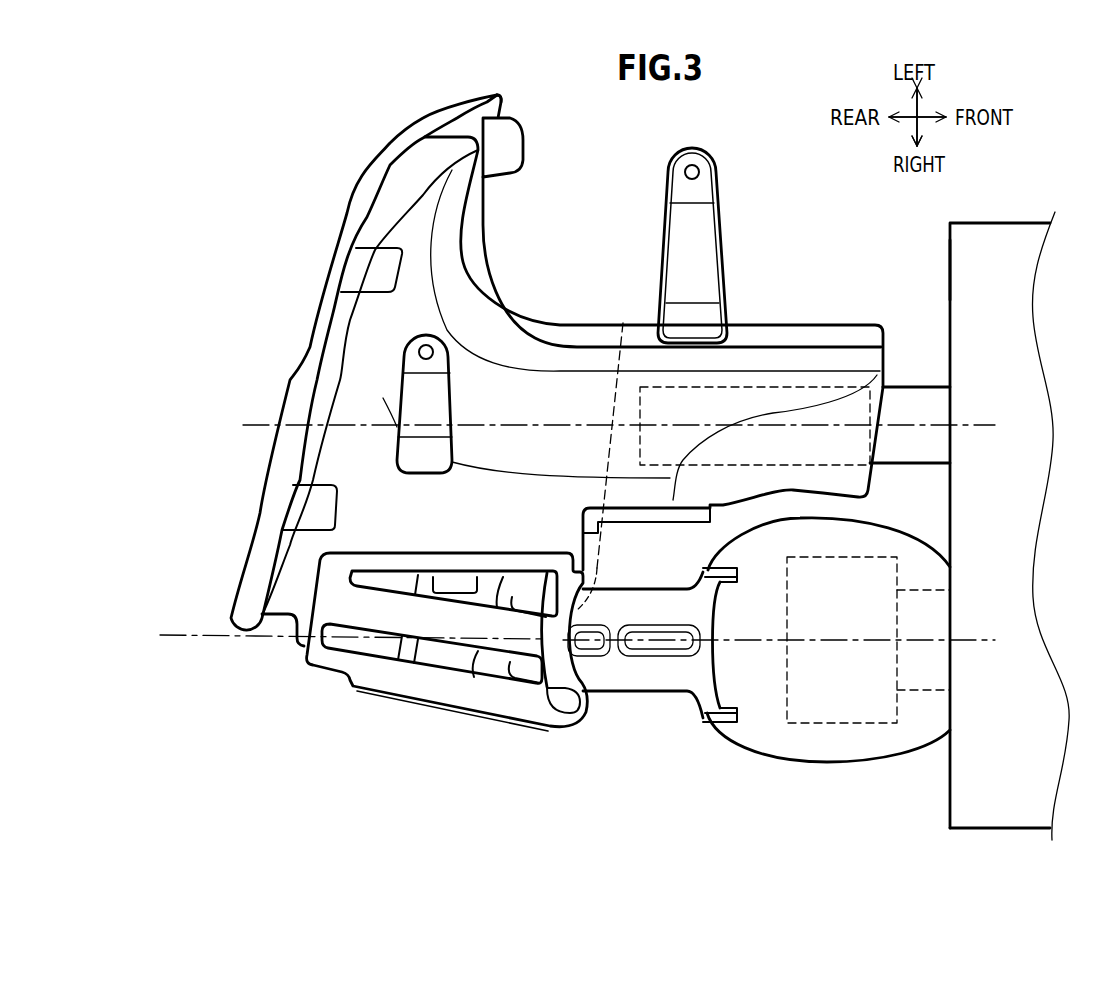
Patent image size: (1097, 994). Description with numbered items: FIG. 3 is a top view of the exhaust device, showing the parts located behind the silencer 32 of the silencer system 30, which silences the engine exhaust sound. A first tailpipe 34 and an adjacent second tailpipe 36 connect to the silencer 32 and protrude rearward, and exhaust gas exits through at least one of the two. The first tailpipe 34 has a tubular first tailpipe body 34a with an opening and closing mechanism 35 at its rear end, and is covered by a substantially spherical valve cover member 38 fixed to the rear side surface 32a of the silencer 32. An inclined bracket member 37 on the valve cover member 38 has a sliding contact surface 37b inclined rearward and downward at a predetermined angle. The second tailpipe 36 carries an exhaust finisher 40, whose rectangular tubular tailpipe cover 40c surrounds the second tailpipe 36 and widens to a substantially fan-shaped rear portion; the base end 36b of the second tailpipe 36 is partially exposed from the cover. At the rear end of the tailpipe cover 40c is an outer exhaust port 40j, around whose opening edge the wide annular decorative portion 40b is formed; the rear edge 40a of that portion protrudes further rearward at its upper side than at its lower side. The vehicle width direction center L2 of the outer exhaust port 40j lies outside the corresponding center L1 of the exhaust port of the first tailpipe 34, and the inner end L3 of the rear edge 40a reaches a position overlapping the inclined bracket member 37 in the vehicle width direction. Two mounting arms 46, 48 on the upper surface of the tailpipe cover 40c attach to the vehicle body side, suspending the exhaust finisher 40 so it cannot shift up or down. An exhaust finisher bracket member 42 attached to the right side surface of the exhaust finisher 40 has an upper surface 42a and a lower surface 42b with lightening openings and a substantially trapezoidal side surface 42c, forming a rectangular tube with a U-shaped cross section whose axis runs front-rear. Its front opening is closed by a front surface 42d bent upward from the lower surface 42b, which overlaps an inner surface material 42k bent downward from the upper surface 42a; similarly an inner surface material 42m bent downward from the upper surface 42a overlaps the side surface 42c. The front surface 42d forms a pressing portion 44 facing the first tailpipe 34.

The silencer system 30 is at (974, 496).
The silencer 32 is at (974, 506).
The rear side surface 32a is at (950, 263).
The first tailpipe 34 is at (826, 682).
The first tailpipe body 34a is at (928, 693).
The opening and closing mechanism 35 is at (845, 723).
The second tailpipe 36 is at (910, 383).
The base end 36b is at (920, 402).
The inclined bracket member 37 is at (644, 641).
The sliding contact surface 37b is at (665, 673).
The valve cover member 38 is at (768, 743).
The exhaust finisher 40 is at (568, 368).
The rear edge 40a is at (231, 624).
The annular decorative portion 40b is at (310, 313).
The tailpipe cover 40c is at (650, 375).
The outer exhaust port 40j is at (385, 144).
The exhaust finisher bracket member 42 is at (467, 647).
The upper surface 42a is at (386, 606).
The lower surface 42b is at (457, 597).
The side surface 42c is at (445, 708).
The front surface 42d is at (602, 577).
The inner surface material 42k is at (530, 587).
The inner surface material 42m is at (492, 710).
The pressing portion 44 is at (580, 667).
The mounting arm 46 is at (440, 352).
The mounting arm 48 is at (718, 183).
The vehicle width direction center L1 is at (978, 637).
The vehicle width direction center L2 is at (978, 422).
The inner end L3 is at (170, 634).